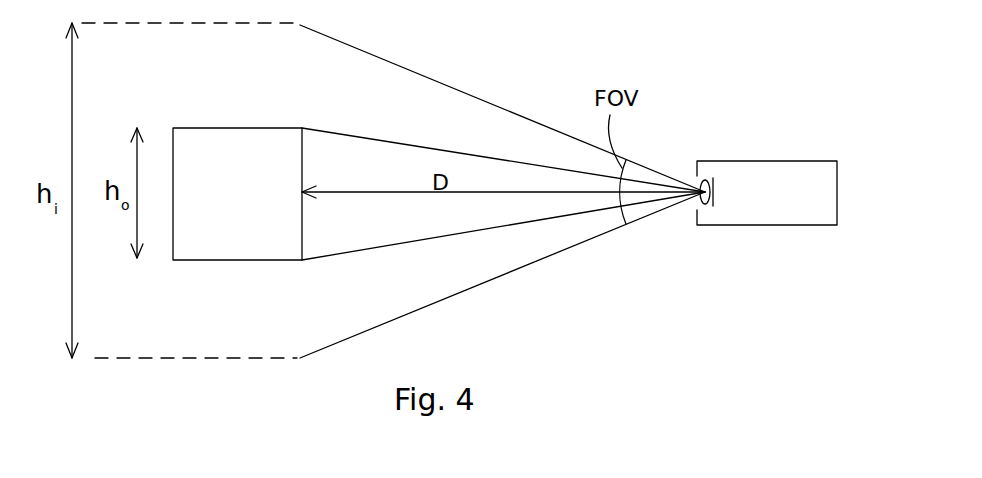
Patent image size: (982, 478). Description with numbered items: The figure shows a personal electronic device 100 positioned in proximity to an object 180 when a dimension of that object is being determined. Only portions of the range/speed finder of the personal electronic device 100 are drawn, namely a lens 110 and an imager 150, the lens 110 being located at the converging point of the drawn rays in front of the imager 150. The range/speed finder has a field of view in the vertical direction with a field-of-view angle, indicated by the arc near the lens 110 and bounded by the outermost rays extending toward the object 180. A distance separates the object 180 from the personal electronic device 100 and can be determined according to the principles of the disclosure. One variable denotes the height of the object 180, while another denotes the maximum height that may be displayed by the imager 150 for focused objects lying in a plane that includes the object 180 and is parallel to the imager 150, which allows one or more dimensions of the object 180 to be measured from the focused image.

The personal electronic device 100 is at (834, 91).
The lens 110 is at (706, 180).
The imager 150 is at (717, 180).
The object 180 is at (219, 128).